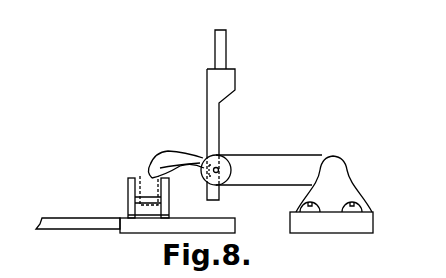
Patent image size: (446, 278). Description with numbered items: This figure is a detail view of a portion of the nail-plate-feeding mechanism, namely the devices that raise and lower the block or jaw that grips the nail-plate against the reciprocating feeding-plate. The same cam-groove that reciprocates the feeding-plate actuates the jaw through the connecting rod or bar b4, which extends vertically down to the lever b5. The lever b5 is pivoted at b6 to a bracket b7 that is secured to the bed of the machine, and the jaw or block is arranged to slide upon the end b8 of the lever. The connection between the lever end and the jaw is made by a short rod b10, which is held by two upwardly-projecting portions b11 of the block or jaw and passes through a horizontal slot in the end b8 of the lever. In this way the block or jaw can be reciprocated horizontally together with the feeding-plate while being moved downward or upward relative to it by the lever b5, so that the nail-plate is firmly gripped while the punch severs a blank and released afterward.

The connecting rod or bar b4 is at (231, 80).
The lever b5 is at (261, 170).
The pivot b6 is at (334, 169).
The bracket b7 is at (331, 204).
The end of lever b8 is at (156, 165).
The short rod b10 is at (138, 179).
The upwardly-projecting portions b11 is at (171, 188).